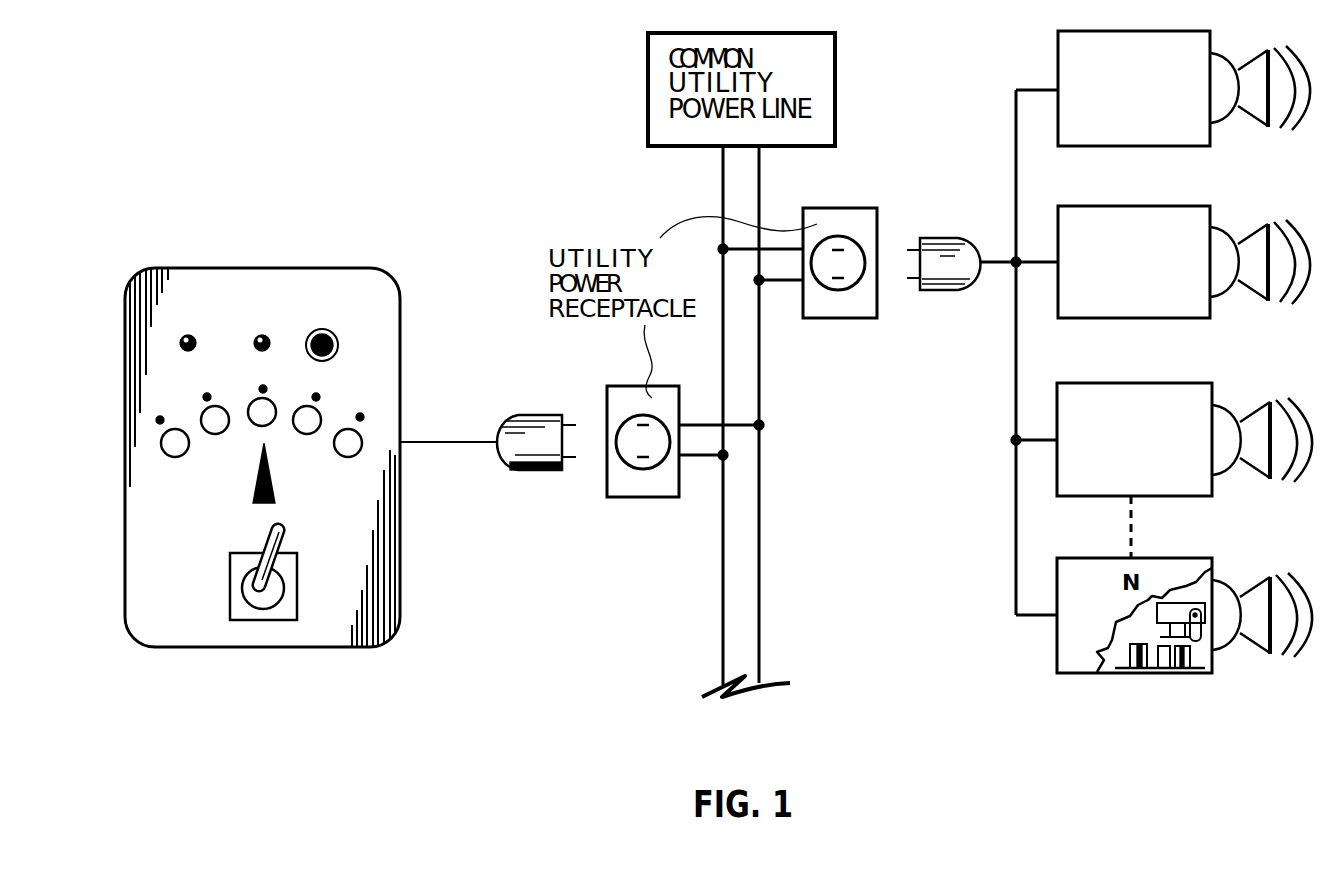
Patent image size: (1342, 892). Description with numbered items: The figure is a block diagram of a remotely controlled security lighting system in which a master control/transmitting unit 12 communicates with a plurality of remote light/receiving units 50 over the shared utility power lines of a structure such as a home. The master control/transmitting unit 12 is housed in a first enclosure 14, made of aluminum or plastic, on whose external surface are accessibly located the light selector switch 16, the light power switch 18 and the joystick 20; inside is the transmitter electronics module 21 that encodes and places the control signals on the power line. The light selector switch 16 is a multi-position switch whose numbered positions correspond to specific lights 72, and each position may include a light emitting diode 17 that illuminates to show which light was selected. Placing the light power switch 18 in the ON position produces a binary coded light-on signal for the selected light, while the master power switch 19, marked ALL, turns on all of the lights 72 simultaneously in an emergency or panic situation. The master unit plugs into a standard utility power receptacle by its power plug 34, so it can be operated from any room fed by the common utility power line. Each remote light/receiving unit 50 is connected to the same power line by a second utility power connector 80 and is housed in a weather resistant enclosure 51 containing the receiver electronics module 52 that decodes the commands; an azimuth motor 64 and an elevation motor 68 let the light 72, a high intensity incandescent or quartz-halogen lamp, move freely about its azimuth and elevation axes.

The master control/transmitting unit 12 is at (307, 444).
The first enclosure 14 is at (296, 424).
The transmitter electronics module 21 is at (296, 424).
The light selector switch 16 is at (275, 490).
The light emitting diode 17 is at (317, 395).
The light power switch 18 is at (237, 298).
The master power switch 19 is at (337, 345).
The joystick 20 is at (287, 603).
The transmitter power plug 34 is at (527, 452).
The remote light/receiving unit 50 is at (1134, 352).
The weather resistant enclosure 51 is at (1134, 352).
The receiver electronics module 52 is at (1134, 352).
The azimuth motor 64 is at (1135, 660).
The elevation motor 68 is at (1172, 660).
The light 72 is at (1290, 115).
The second utility power connector 80 is at (948, 272).